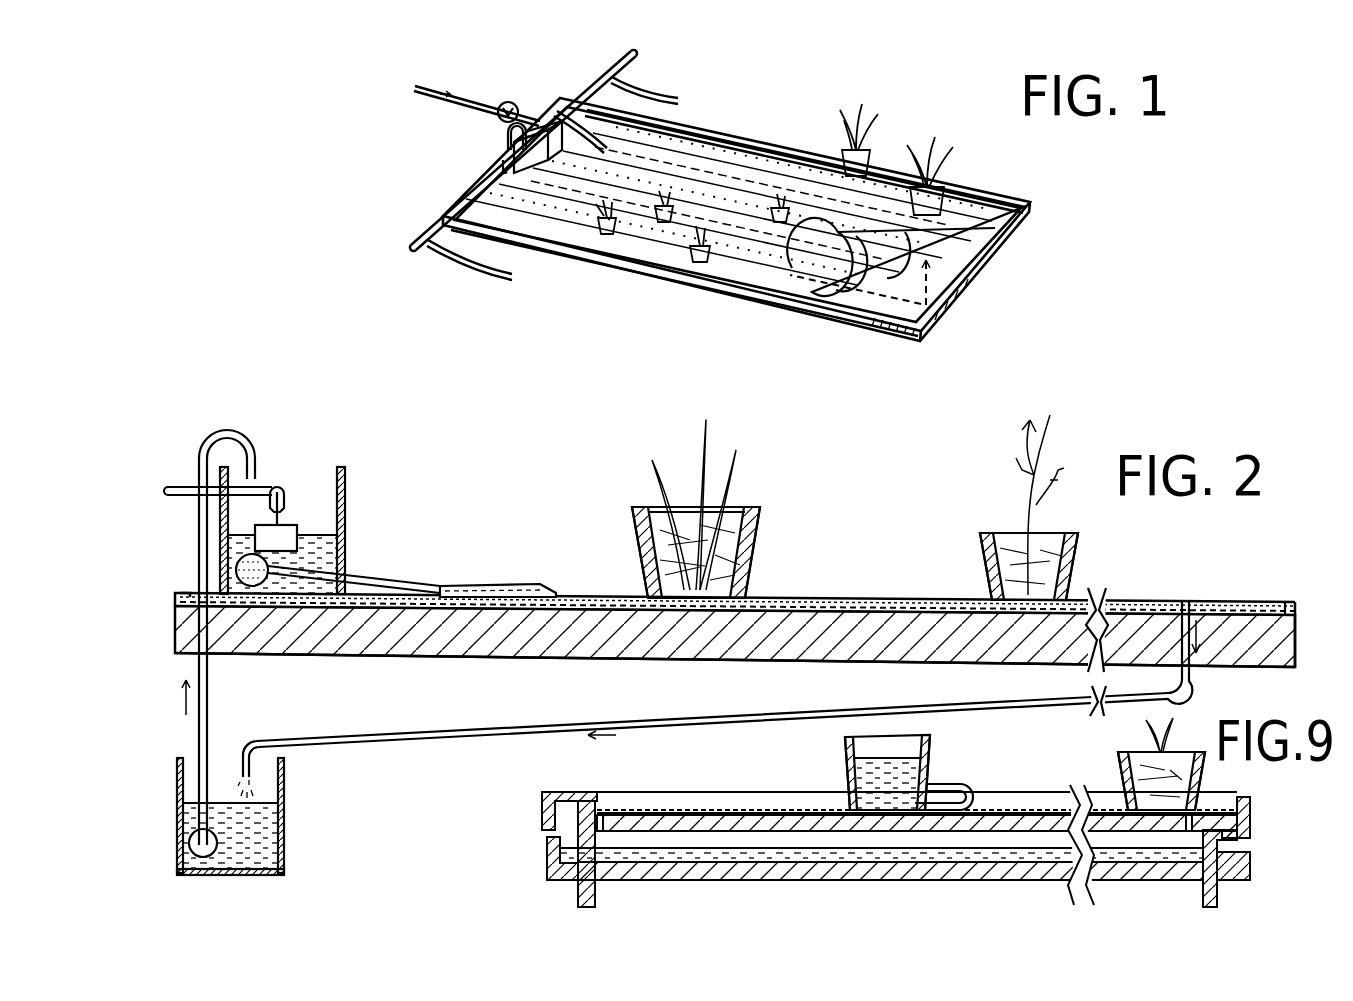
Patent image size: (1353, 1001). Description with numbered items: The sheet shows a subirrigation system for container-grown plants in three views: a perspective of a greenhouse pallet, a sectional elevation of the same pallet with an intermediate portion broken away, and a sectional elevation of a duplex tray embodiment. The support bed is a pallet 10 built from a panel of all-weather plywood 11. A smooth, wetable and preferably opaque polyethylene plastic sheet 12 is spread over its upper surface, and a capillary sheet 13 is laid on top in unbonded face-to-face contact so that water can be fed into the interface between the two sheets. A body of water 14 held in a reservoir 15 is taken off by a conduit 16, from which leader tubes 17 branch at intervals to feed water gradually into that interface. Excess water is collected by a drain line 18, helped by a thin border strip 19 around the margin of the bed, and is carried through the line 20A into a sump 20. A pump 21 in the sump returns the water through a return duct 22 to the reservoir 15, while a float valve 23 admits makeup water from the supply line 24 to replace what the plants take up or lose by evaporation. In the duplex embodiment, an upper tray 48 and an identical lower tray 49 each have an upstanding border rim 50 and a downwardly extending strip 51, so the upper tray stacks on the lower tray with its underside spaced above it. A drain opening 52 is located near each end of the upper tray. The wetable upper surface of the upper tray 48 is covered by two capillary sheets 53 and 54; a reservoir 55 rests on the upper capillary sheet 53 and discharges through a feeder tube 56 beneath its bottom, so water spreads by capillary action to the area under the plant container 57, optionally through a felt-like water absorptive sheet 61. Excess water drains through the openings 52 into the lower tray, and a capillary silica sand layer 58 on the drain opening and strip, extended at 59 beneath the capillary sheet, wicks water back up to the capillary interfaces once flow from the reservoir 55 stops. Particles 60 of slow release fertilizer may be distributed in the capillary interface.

In FIG. 1, the pallet 10 is at (660, 285).
In FIG. 2, the pallet 10 is at (383, 663).
In FIG. 2, the plywood panel 11 is at (535, 658).
In FIG. 1, the polyethylene plastic sheet 12 is at (598, 128).
In FIG. 2, the polyethylene plastic sheet 12 is at (606, 608).
In FIG. 1, the capillary sheet 13 is at (840, 265).
In FIG. 2, the capillary sheet 13 is at (604, 598).
In FIG. 2, the body of water 14 is at (322, 545).
In FIG. 1, the reservoir 15 is at (512, 152).
In FIG. 2, the reservoir 15 is at (345, 480).
In FIG. 1, the conduit 16 is at (600, 78).
In FIG. 2, the conduit 16 is at (237, 567).
In FIG. 1, the leader tubes 17 is at (650, 92).
In FIG. 2, the leader tubes 17 is at (426, 587).
In FIG. 1, the drain line 18 is at (926, 262).
In FIG. 2, the drain line 18 is at (1185, 598).
In FIG. 1, the border strip 19 is at (1024, 224).
In FIG. 2, the border strip 19 is at (1285, 602).
In FIG. 1, the sump 20 is at (508, 138).
In FIG. 2, the sump 20 is at (285, 824).
In FIG. 1, the line 20A is at (640, 250).
In FIG. 2, the line 20A is at (482, 743).
In FIG. 2, the pump 21 is at (190, 846).
In FIG. 2, the return duct 22 is at (199, 540).
In FIG. 2, the float valve 23 is at (285, 517).
In FIG. 1, the supply line 24 is at (452, 104).
In FIG. 2, the supply line 24 is at (188, 487).
In FIG. 9, the upper tray 48 is at (1250, 808).
In FIG. 9, the lower tray 49 is at (1246, 878).
In FIG. 9, the border rim 50 is at (1250, 798).
In FIG. 9, the strip 51 is at (560, 848).
In FIG. 9, the drain opening 52 is at (604, 818).
In FIG. 9, the upper capillary sheet 53 is at (784, 812).
In FIG. 9, the lower capillary sheet 54 is at (738, 818).
In FIG. 9, the reservoir 55 is at (846, 770).
In FIG. 9, the feeder tube 56 is at (962, 784).
In FIG. 9, the plant container 57 is at (1120, 765).
In FIG. 9, the capillary silica sand layer 58 is at (604, 850).
In FIG. 9, the extension of capillary sand layer 59 is at (636, 812).
In FIG. 9, the particles of slow release fertilizer 60 is at (1008, 813).
In FIG. 9, the water absorptive sheet material 61 is at (1122, 812).